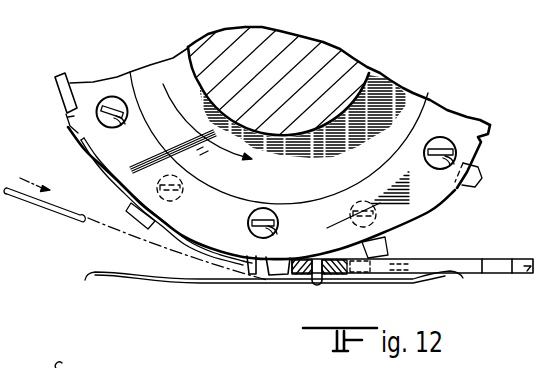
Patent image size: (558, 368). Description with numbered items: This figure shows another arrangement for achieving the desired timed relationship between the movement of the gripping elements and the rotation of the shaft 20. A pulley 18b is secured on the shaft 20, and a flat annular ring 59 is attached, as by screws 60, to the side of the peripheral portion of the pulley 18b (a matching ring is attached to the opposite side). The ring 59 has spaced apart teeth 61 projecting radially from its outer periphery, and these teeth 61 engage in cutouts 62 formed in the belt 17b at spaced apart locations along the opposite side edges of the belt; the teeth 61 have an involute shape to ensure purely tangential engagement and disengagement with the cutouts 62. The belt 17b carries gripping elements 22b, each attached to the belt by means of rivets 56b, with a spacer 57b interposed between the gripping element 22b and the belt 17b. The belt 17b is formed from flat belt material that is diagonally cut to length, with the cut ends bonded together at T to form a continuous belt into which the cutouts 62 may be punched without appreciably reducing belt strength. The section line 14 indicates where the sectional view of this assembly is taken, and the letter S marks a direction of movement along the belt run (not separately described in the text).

The pulley 18b is at (417, 110).
The shaft 20 is at (340, 63).
The flat annular ring 59 is at (479, 135).
The screws 60 is at (445, 140).
The teeth 61 is at (72, 127).
The bonded joint T is at (100, 175).
The strap S is at (72, 218).
The gripping element 22b is at (205, 293).
The belt 17b is at (525, 270).
The cutouts 62 is at (497, 266).
The rivets 56b is at (322, 282).
The spacer 57b is at (311, 283).
The section line 14 is at (228, 172).